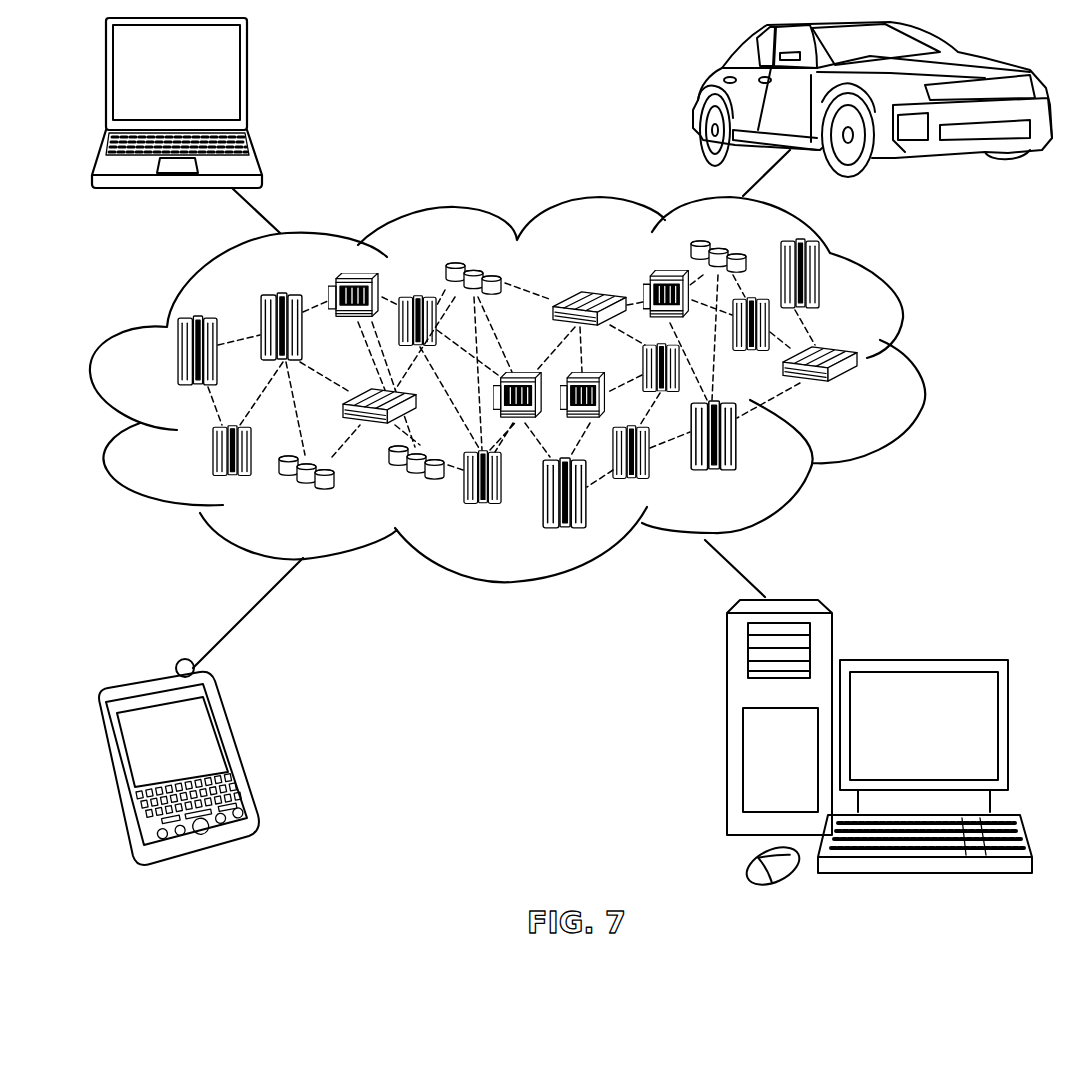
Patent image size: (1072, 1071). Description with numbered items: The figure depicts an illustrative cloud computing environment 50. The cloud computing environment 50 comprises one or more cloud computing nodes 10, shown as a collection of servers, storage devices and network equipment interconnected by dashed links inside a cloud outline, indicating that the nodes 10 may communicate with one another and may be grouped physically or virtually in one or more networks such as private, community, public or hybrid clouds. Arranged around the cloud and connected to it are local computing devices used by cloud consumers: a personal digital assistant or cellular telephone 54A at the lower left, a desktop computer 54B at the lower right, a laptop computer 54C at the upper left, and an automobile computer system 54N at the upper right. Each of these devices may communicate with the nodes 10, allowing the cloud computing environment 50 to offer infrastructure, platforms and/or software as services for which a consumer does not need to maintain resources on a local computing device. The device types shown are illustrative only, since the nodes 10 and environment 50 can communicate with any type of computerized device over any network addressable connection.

The cloud computing node 10 is at (862, 393).
The cloud computing environment 50 is at (925, 363).
The personal digital assistant or cellular telephone 54A is at (237, 753).
The desktop computer 54B is at (922, 660).
The laptop computer 54C is at (249, 81).
The automobile computer system 54N is at (698, 98).